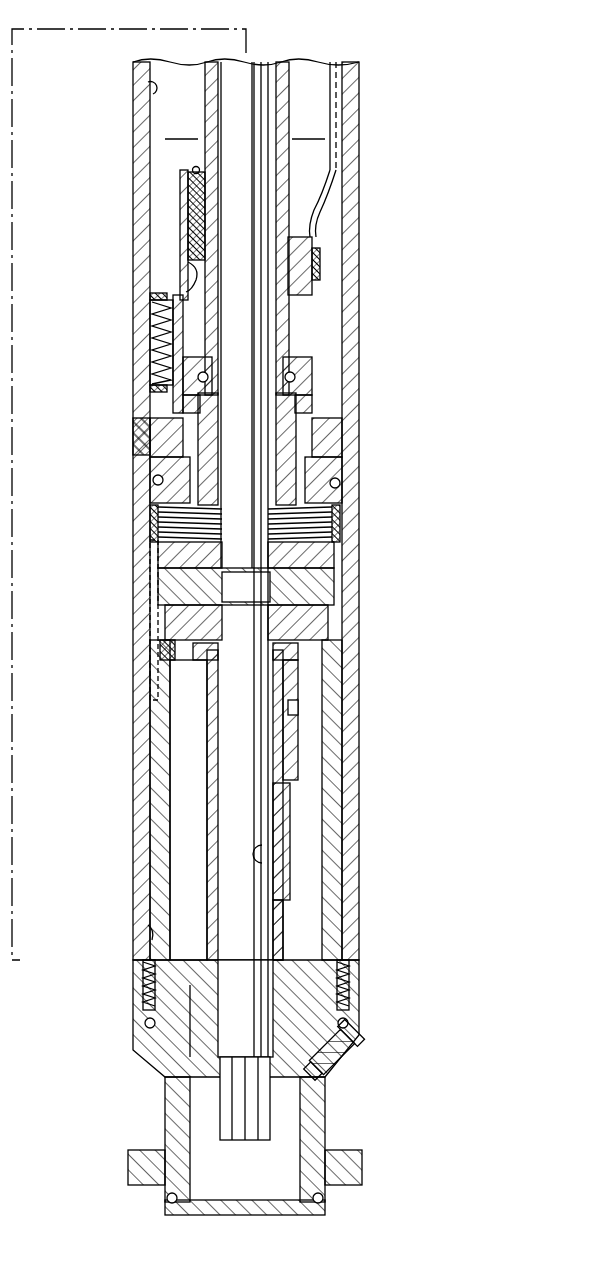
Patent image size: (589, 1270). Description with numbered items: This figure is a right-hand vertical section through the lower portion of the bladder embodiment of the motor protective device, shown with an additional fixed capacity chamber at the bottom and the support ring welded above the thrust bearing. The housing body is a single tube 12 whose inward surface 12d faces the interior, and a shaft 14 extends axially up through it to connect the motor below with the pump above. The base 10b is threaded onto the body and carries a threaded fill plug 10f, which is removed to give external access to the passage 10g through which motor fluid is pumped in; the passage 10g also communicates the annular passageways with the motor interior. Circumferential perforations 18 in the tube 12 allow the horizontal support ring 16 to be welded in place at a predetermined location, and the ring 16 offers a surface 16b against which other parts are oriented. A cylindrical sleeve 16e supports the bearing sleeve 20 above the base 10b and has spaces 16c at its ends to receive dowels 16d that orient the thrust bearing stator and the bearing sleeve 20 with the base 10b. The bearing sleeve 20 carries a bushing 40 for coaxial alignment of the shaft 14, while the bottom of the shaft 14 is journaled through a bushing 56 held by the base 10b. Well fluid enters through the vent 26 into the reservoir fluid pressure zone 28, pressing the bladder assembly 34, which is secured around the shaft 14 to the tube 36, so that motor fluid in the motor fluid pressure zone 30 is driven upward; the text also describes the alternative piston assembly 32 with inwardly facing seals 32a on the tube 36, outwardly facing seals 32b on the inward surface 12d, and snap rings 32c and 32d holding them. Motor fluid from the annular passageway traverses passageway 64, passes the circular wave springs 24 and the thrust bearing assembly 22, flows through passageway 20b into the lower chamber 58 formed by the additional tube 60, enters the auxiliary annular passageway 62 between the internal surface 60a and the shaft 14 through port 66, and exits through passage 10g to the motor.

The base 10b is at (145, 1040).
The fill plug 10f is at (340, 1078).
The passage 10g is at (345, 992).
The tube 12 is at (140, 540).
The inward surface 12d is at (148, 82).
The shaft 14 is at (245, 1112).
The support ring 16 is at (343, 447).
The surface 16b is at (340, 485).
The space 16c is at (160, 690).
The dowel 16d is at (170, 650).
The cylindrical sleeve 16e is at (160, 778).
The circumferential perforations 18 is at (133, 437).
The bearing sleeve 20 is at (205, 720).
The passageway 20b is at (322, 690).
The thrust bearing assembly 22 is at (335, 592).
The circular wave springs 24 is at (345, 525).
The vent 26 is at (148, 408).
The reservoir fluid pressure zone 28 is at (195, 330).
The motor fluid pressure zone 30 is at (168, 146).
The piston assembly 32 is at (180, 192).
The inwardly facing seals 32a is at (190, 222).
The outwardly facing seals 32b is at (156, 350).
The snap rings 32c is at (192, 168).
The snap rings 32d is at (158, 300).
The bladder assembly 34 is at (320, 212).
The tube 36 is at (332, 90).
The bushing 40 is at (288, 722).
The bushing 56 is at (195, 1003).
The lower chamber 58 is at (190, 812).
The tube 60 is at (285, 888).
The internal surface 60a is at (262, 852).
The auxiliary annular passageway 62 is at (285, 822).
The passageway 64 is at (335, 395).
The port 66 is at (290, 745).